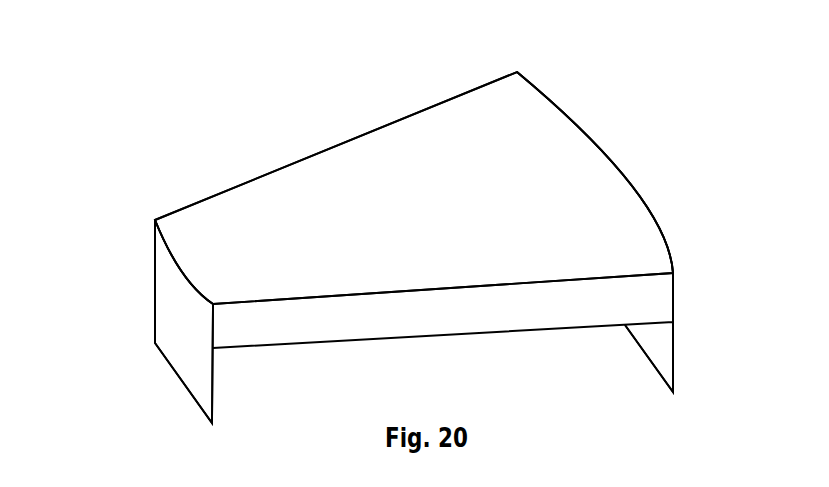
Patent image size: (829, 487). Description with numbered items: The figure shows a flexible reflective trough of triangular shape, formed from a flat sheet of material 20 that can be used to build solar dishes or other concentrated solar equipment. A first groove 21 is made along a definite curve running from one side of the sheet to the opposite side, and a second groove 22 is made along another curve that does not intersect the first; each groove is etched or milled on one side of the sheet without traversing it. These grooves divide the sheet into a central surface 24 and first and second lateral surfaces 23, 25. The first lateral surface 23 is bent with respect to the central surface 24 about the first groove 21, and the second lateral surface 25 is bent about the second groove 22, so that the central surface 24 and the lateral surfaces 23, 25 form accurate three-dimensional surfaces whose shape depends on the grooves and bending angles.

The flat sheet of material 20 is at (257, 123).
The first groove 21 is at (580, 122).
The second groove 22 is at (162, 260).
The first lateral surface 23 is at (658, 345).
The central surface 24 is at (388, 243).
The second lateral surface 25 is at (177, 320).